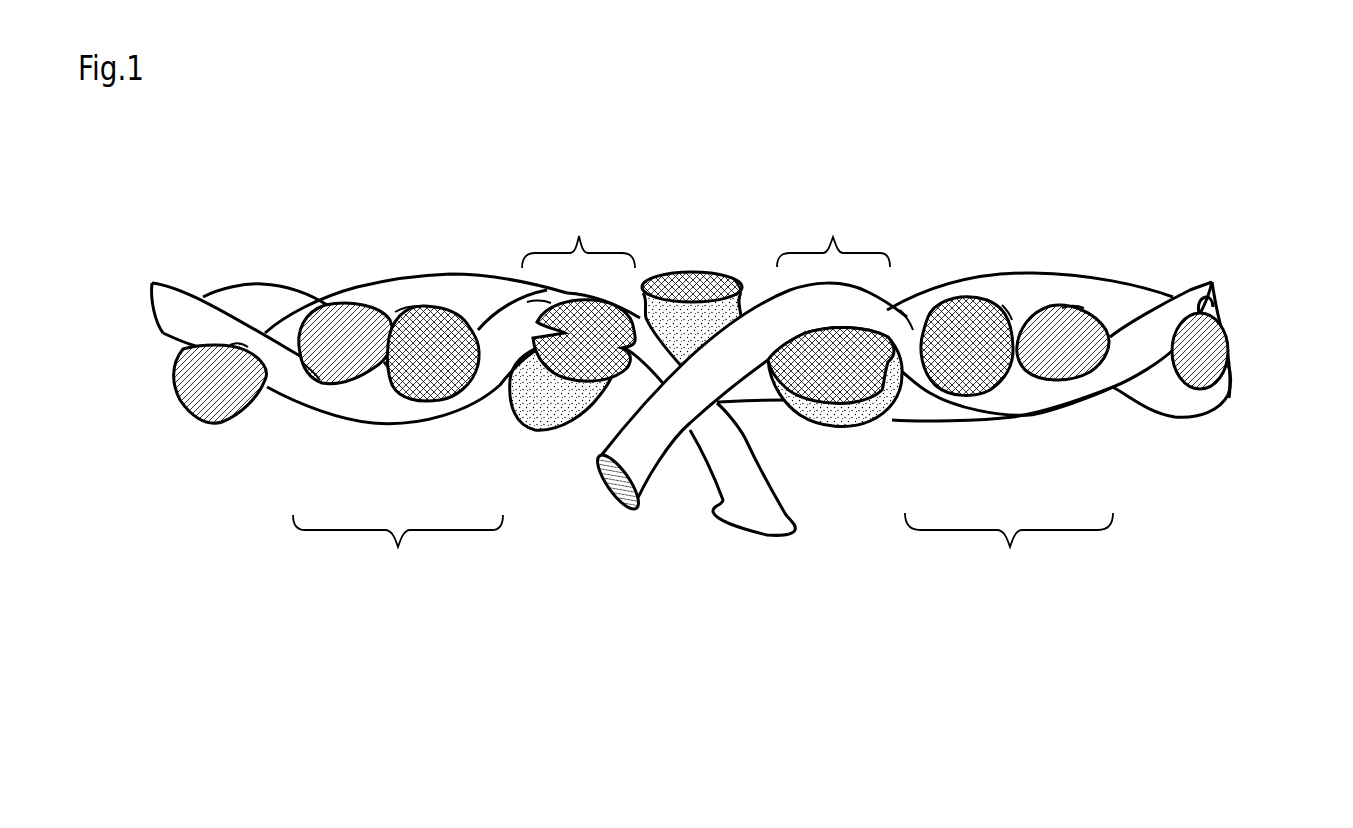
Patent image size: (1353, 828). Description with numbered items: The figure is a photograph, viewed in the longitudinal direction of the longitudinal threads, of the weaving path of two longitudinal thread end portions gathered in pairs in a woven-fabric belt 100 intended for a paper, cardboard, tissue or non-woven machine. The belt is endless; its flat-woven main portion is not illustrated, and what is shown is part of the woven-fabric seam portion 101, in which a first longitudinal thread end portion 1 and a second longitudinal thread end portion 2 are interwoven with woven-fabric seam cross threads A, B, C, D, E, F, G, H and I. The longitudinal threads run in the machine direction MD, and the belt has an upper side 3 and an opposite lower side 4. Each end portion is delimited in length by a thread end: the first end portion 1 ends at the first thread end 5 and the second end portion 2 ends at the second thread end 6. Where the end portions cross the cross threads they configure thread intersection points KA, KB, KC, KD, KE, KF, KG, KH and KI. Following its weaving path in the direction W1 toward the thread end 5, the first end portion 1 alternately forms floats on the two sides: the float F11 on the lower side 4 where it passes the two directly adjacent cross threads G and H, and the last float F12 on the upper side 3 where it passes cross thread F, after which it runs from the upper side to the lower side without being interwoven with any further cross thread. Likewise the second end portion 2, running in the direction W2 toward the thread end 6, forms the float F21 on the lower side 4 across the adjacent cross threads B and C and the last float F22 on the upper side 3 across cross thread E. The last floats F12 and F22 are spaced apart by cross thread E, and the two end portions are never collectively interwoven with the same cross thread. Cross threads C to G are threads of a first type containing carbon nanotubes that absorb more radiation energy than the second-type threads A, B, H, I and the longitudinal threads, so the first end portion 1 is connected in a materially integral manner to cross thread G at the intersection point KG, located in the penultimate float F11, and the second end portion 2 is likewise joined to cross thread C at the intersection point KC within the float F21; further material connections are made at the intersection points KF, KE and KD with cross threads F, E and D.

The first longitudinal thread end portion 1 is at (1118, 377).
The second longitudinal thread end portion 2 is at (180, 313).
The upper side 3 is at (786, 202).
The lower side 4 is at (375, 456).
The first thread end 5 is at (643, 452).
The second thread end 6 is at (762, 505).
The woven-fabric belt 100 is at (1188, 164).
The woven-fabric seam portion 101 is at (367, 197).
The woven-fabric seam cross thread A is at (217, 397).
The woven-fabric seam cross thread B is at (332, 345).
The woven-fabric seam cross thread C is at (433, 340).
The woven-fabric seam cross thread D is at (567, 333).
The woven-fabric seam cross thread E is at (685, 285).
The woven-fabric seam cross thread F is at (825, 378).
The woven-fabric seam cross thread G is at (960, 333).
The woven-fabric seam cross thread H is at (1097, 320).
The woven-fabric seam cross thread I is at (1197, 349).
The thread intersection point KA is at (240, 347).
The thread intersection point KB is at (307, 362).
The thread intersection point KC is at (405, 315).
The thread intersection point KD is at (527, 302).
The thread intersection point KE is at (735, 277).
The thread intersection point KF is at (907, 303).
The thread intersection point KG is at (1009, 318).
The thread intersection point KH is at (1073, 347).
The thread intersection point KI is at (1212, 285).
The float F11 is at (970, 532).
The float F12 is at (853, 252).
The float F21 is at (437, 532).
The float F22 is at (608, 252).
The direction W1 is at (1117, 628).
The direction W2 is at (163, 628).
The MD direction MD is at (648, 639).